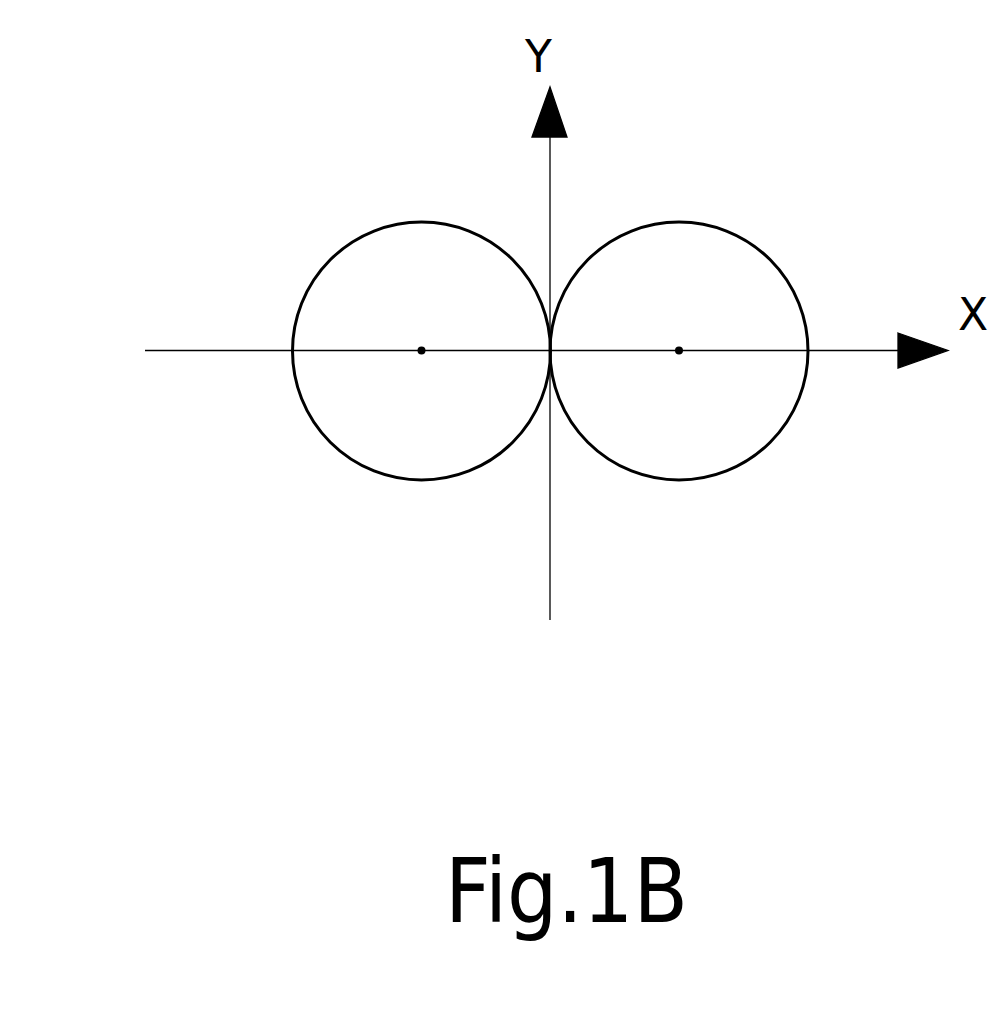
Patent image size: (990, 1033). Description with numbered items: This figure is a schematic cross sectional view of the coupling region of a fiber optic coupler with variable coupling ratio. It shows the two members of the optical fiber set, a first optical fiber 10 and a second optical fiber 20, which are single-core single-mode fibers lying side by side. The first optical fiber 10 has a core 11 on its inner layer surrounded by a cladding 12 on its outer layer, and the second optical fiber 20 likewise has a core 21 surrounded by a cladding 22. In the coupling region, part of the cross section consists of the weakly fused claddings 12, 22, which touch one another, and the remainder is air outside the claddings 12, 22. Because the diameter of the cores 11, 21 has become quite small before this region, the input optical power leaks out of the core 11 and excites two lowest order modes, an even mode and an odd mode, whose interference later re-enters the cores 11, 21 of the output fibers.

The first optical fiber 10 is at (377, 361).
The core 11 is at (421, 351).
The cladding 12 is at (425, 419).
The second optical fiber 20 is at (721, 366).
The core 21 is at (679, 351).
The cladding 22 is at (680, 427).